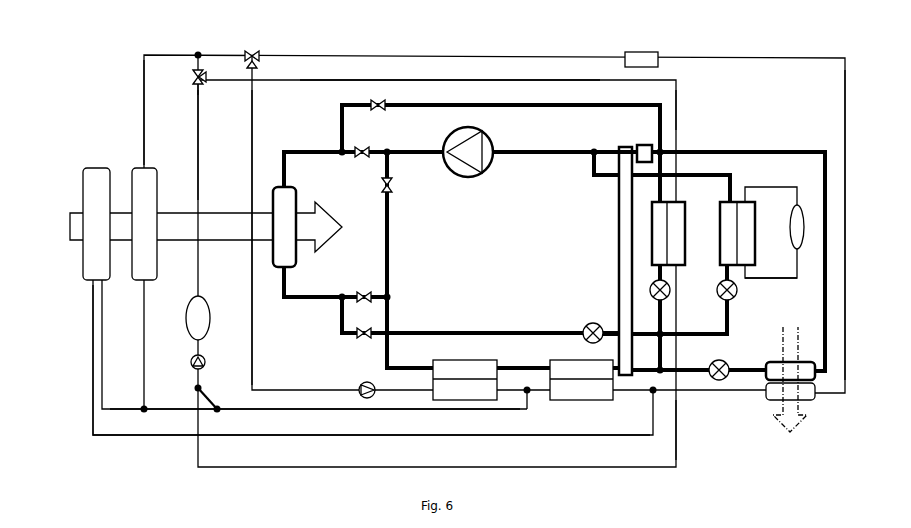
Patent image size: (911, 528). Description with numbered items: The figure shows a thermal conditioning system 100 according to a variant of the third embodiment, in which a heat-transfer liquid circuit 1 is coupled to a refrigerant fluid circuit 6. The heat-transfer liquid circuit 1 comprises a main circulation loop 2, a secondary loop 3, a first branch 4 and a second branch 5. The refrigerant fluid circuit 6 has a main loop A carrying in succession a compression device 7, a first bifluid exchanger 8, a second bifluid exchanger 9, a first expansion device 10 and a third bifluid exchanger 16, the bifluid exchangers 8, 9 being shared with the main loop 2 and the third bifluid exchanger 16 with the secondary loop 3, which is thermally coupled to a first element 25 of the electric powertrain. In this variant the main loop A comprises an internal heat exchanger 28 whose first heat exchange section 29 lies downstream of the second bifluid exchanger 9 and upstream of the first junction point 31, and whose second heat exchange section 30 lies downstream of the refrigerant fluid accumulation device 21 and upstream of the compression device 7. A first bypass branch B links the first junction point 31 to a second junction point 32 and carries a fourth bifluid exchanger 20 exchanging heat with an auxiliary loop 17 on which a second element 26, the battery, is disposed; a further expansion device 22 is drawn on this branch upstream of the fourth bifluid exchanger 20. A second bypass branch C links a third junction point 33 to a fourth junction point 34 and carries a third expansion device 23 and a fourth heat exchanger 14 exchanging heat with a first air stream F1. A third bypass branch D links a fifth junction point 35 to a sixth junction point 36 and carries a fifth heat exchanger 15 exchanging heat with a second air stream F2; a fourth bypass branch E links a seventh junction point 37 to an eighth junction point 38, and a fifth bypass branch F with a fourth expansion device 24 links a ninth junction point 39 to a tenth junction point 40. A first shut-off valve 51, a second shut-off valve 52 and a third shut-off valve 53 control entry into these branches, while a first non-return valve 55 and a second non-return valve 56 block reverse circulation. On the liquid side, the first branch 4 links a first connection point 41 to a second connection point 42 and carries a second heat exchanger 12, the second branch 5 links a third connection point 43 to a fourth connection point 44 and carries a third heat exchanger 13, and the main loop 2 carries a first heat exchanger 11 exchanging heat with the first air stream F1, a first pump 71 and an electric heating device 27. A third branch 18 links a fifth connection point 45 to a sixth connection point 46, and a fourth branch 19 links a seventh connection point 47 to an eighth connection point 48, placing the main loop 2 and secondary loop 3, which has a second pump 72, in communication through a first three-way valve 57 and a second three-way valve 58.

The thermal conditioning system 100 is at (430, 38).
The heat-transfer liquid circuit 1 is at (688, 93).
The main circulation loop 2 is at (843, 90).
The secondary loop 3 is at (200, 120).
The first branch 4 is at (140, 100).
The second branch 5 is at (91, 306).
The refrigerant fluid circuit 6 is at (520, 160).
The compression device 7 is at (476, 178).
The first bifluid exchanger 8 is at (470, 361).
The second bifluid exchanger 9 is at (565, 361).
The first expansion device 10 is at (653, 283).
The first heat exchanger 11 is at (812, 402).
The second heat exchanger 12 is at (145, 178).
The third heat exchanger 13 is at (97, 178).
The fourth heat exchanger 14 is at (818, 376).
The fifth heat exchanger 15 is at (290, 200).
The third bifluid exchanger 16 is at (660, 235).
The auxiliary loop 17 is at (770, 279).
The third branch 18 is at (193, 74).
The fourth branch 19 is at (212, 395).
The fourth bifluid exchanger 20 is at (730, 238).
The refrigerant fluid accumulation device 21 is at (625, 148).
The expansion valve 22 is at (720, 282).
The third expansion device 23 is at (723, 359).
The fourth expansion device 24 is at (586, 324).
The first element of the electric powertrain 25 is at (195, 313).
The second element of the electric powertrain 26 is at (793, 240).
The electric heating device 27 is at (648, 60).
The internal heat exchanger 28 is at (625, 250).
The first heat exchange section 29 is at (620, 330).
The second heat exchange section 30 is at (625, 195).
The first junction point 31 is at (665, 336).
The second junction point 32 is at (590, 156).
The third junction point 33 is at (664, 370).
The fourth junction point 34 is at (665, 150).
The fifth junction point 35 is at (392, 148).
The sixth junction point 36 is at (393, 300).
The seventh junction point 37 is at (645, 144).
The eighth junction point 38 is at (337, 148).
The ninth junction point 39 is at (657, 366).
The tenth junction point 40 is at (340, 303).
The first connection point 41 is at (256, 55).
The second connection point 42 is at (530, 394).
The third connection point 43 is at (142, 405).
The fourth connection point 44 is at (650, 393).
The fifth connection point 45 is at (195, 54).
The sixth connection point 46 is at (195, 84).
The seventh connection point 47 is at (194, 388).
The eighth connection point 48 is at (221, 411).
The first shut-off valve 51 is at (392, 190).
The second shut-off valve 52 is at (365, 148).
The third shut-off valve 53 is at (385, 107).
The first non-return valve 55 is at (363, 292).
The second non-return valve 56 is at (357, 335).
The first three-way valve 57 is at (257, 66).
The second three-way valve 58 is at (206, 80).
The first heat-transfer liquid circulation pump 71 is at (360, 386).
The second heat-transfer liquid circulation pump 72 is at (204, 355).
The main loop A is at (393, 235).
The first bypass branch B is at (603, 177).
The second bypass branch C is at (830, 285).
The third bypass branch D is at (300, 293).
The fourth bypass branch E is at (525, 108).
The fifth bypass branch F is at (455, 333).
The first air stream F1 is at (795, 420).
The second air stream F2 is at (80, 222).